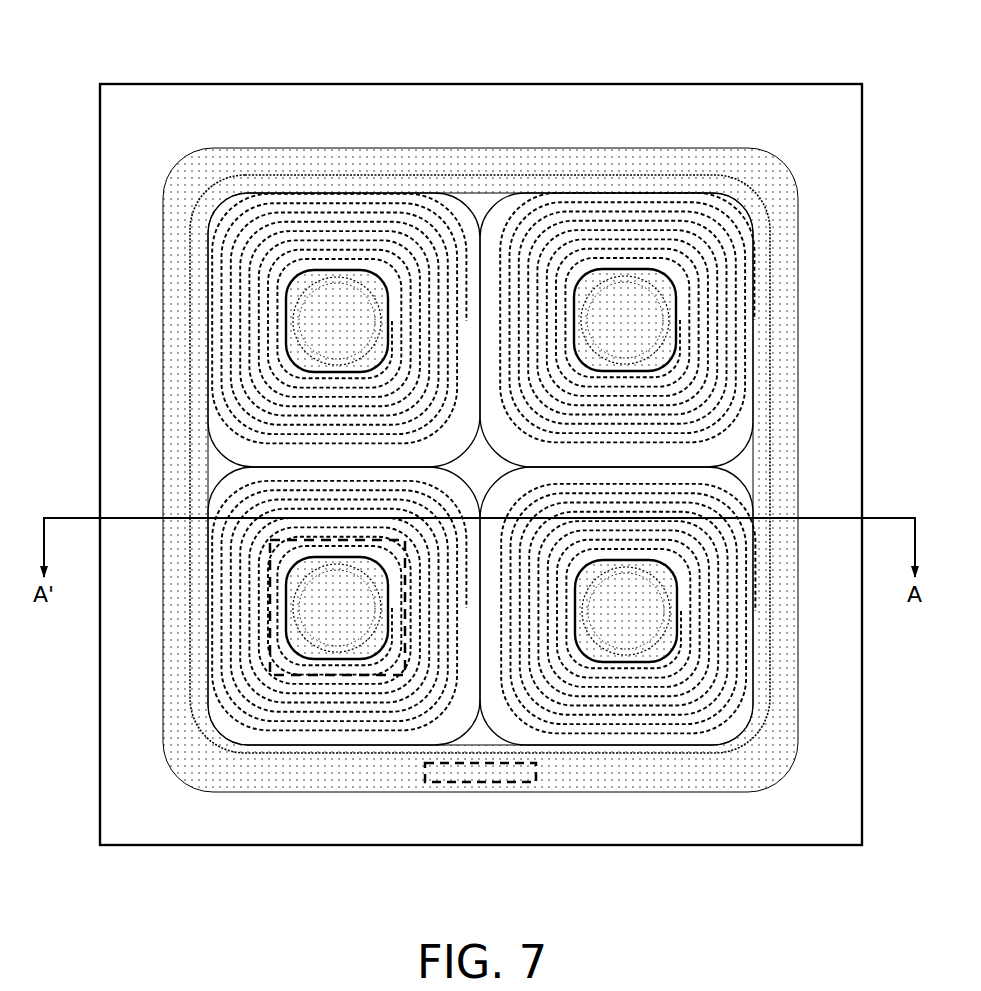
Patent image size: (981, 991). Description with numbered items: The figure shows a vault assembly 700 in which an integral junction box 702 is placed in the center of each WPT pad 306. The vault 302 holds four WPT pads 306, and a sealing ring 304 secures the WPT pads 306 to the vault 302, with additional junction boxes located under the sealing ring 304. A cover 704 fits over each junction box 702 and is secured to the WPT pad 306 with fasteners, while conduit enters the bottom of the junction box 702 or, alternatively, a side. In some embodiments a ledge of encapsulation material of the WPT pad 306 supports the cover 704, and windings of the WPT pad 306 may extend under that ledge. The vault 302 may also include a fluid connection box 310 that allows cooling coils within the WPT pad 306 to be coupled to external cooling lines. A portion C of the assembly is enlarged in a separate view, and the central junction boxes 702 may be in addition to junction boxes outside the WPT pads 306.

The vault assembly 700 is at (100, 62).
The vault 302 is at (248, 84).
The sealing ring 304 is at (163, 218).
The WPT pad 306 is at (335, 174).
The fluid connection box 310 is at (477, 783).
The junction box 702 is at (298, 322).
The cover 704 is at (337, 271).
The portion C is at (274, 690).